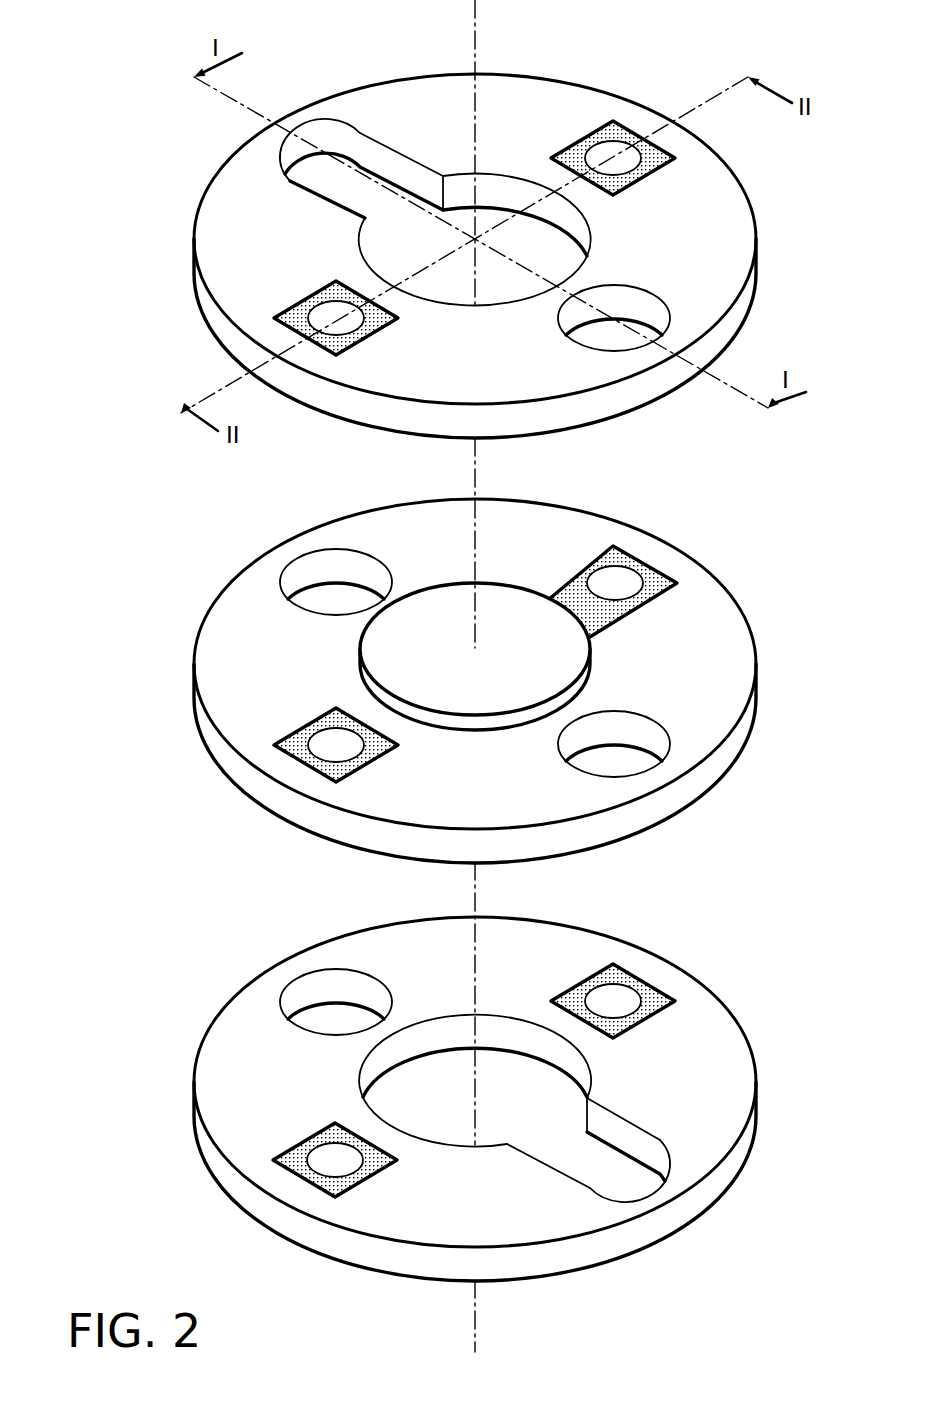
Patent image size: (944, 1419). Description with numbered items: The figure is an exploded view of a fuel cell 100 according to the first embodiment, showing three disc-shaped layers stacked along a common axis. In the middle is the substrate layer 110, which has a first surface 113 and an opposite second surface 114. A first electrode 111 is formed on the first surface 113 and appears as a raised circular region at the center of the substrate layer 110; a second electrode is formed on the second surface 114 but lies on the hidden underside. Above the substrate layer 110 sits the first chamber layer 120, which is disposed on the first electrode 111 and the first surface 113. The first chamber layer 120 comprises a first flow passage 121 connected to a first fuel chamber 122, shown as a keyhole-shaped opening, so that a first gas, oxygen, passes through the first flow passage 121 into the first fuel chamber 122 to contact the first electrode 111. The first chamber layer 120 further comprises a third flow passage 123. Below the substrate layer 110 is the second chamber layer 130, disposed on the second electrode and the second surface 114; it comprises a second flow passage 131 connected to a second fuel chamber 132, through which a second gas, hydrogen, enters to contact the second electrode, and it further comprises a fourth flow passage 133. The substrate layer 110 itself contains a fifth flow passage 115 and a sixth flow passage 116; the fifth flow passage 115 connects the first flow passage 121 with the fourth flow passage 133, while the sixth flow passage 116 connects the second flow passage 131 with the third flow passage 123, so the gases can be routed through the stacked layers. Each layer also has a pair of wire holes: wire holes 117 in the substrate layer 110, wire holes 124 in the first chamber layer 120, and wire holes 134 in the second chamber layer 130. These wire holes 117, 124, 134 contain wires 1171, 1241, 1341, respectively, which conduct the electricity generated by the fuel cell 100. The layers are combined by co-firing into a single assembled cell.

The fuel cell 100 is at (103, 48).
The substrate layer 110 is at (218, 745).
The first electrode 111 is at (560, 657).
The first surface 113 is at (390, 537).
The second surface 114 is at (688, 803).
The fifth flow passage 115 is at (323, 575).
The sixth flow passage 116 is at (638, 732).
The wire holes 117 is at (615, 582).
The wires 1171 is at (598, 550).
The first chamber layer 120 is at (218, 320).
The first flow passage 121 is at (338, 186).
The first fuel chamber 122 is at (538, 240).
The third flow passage 123 is at (638, 305).
The wire holes 124 is at (610, 153).
The wires 1241 is at (598, 130).
The second chamber layer 130 is at (218, 1162).
The second flow passage 131 is at (640, 1148).
The second fuel chamber 132 is at (523, 1083).
The fourth flow passage 133 is at (323, 995).
The wire holes 134 is at (610, 1000).
The wires 1341 is at (598, 975).